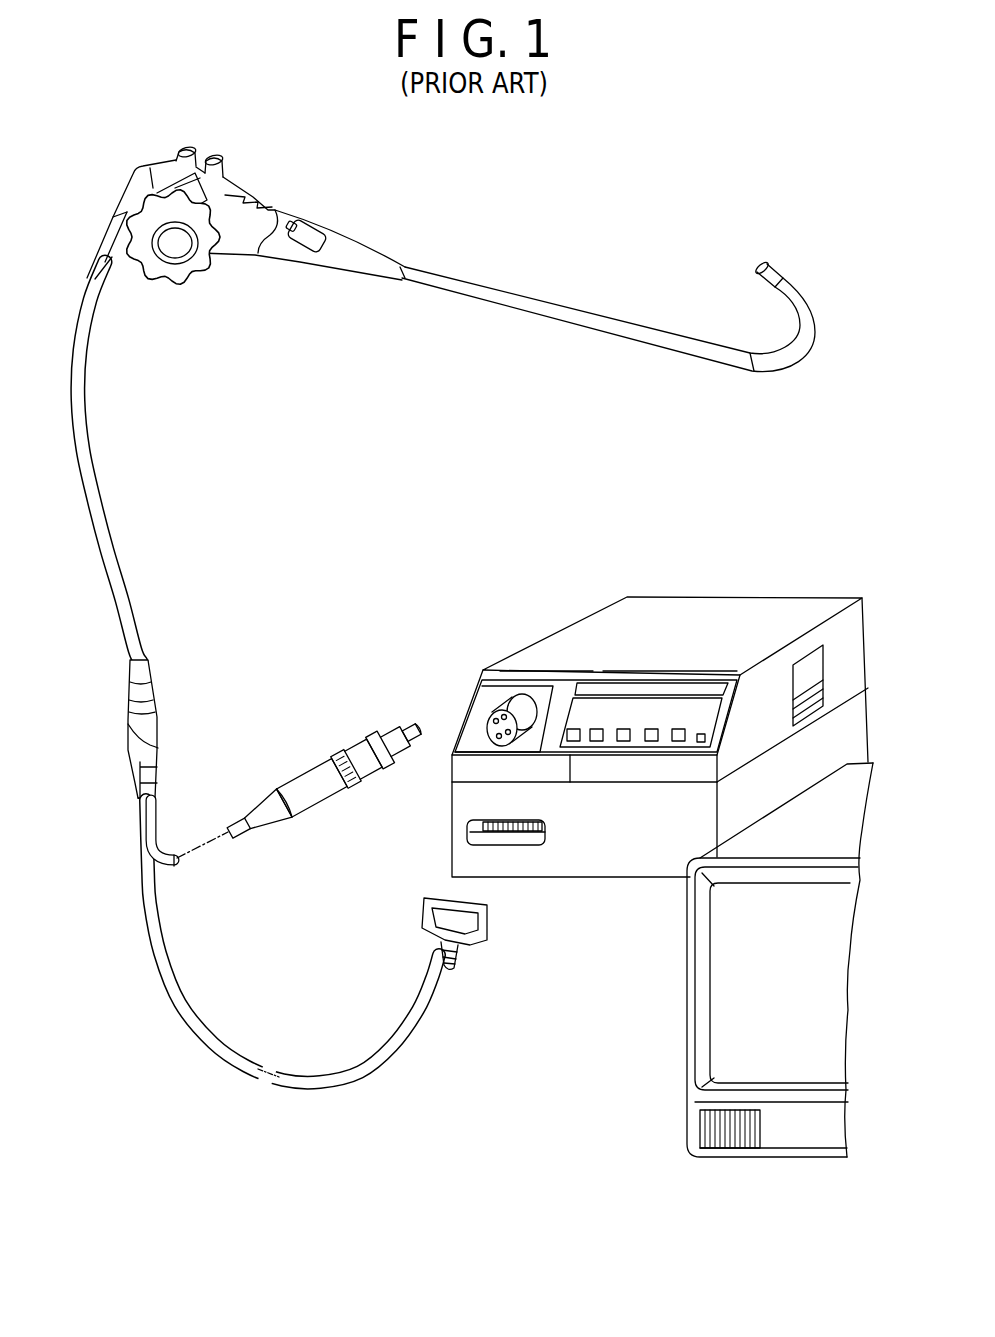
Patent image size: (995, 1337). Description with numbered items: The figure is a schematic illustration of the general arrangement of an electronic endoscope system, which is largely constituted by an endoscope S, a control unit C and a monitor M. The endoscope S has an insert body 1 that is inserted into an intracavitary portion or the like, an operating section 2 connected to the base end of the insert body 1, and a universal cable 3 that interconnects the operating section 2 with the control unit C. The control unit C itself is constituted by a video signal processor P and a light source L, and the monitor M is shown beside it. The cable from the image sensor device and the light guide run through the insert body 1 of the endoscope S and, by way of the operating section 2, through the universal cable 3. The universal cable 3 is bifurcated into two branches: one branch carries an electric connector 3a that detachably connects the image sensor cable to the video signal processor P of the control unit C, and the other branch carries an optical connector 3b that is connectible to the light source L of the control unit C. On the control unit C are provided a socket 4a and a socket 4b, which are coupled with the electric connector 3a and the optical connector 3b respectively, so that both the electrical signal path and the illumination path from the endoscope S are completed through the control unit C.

The endoscope S is at (344, 232).
The insert body 1 is at (767, 374).
The operating section 2 is at (308, 265).
The universal cable 3 is at (113, 524).
The electric connector 3a is at (418, 914).
The optical connector 3b is at (360, 742).
The socket 4a is at (467, 837).
The socket 4b is at (493, 721).
The light source L is at (592, 622).
The video signal processor P is at (592, 862).
The control unit C is at (538, 880).
The monitor M is at (687, 985).